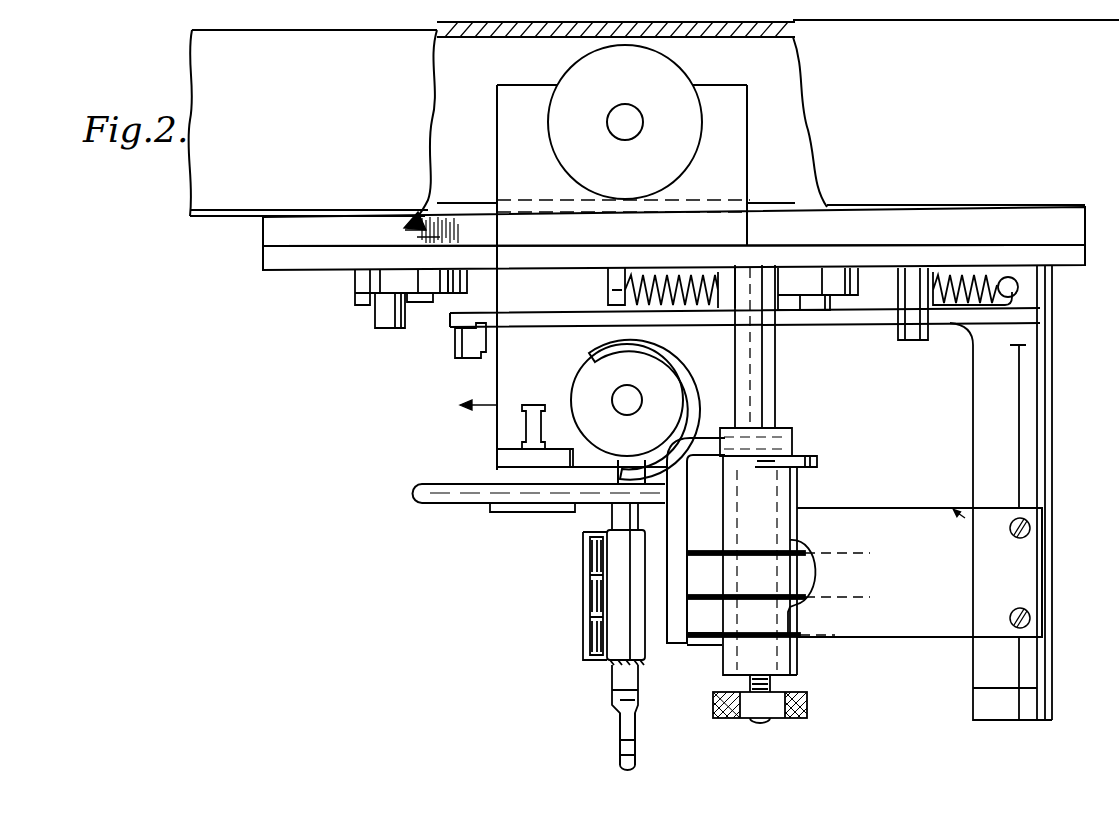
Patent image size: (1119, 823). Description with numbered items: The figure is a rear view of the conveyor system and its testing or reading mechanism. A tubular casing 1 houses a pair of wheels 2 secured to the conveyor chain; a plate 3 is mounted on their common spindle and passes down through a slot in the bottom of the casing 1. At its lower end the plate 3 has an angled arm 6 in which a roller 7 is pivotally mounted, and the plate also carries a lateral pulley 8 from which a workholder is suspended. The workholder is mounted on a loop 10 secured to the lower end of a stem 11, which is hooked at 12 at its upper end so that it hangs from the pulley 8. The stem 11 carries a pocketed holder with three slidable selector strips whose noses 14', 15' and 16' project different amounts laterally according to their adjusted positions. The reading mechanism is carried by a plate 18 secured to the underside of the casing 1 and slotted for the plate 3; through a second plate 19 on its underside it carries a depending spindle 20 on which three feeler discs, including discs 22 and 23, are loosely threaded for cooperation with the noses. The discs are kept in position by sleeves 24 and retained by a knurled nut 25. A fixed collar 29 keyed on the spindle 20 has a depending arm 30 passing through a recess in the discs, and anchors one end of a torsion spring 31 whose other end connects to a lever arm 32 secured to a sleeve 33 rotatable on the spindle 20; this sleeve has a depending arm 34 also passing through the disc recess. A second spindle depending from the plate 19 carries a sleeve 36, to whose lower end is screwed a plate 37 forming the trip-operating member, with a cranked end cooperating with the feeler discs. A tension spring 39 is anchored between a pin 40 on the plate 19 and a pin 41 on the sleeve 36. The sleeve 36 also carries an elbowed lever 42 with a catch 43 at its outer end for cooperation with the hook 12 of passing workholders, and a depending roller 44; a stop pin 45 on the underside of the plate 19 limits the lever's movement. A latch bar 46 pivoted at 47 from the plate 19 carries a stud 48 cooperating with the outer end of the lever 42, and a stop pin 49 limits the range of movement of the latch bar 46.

The tubular casing 1 is at (653, 118).
The wheels 2 is at (625, 122).
The plate 3 is at (733, 158).
The angled arm 6 is at (497, 453).
The roller 7 is at (525, 505).
The lateral pulley 8 is at (590, 378).
The loop 10 is at (622, 730).
The stem 11 is at (612, 519).
The hook 12 is at (684, 379).
The nose 14' is at (567, 634).
The nose 15' is at (569, 595).
The nose 16' is at (570, 596).
The plate 18 is at (270, 233).
The second plate 19 is at (270, 263).
The depending spindle 20 is at (762, 376).
The disc 22 is at (838, 598).
The disc 23 is at (838, 554).
The sleeves 24 is at (760, 545).
The knurled nut 25 is at (808, 700).
The fixed collar 29 is at (792, 430).
The depending arm 30 is at (679, 543).
The torsion spring 31 is at (817, 455).
The lever arm 32 is at (484, 505).
The sleeve 33 is at (787, 498).
The depending arm 34 is at (661, 641).
The sleeve 36 is at (1015, 412).
The plate 37 is at (1018, 569).
The tension spring 39 is at (681, 283).
The pin 40 is at (608, 286).
The pin 41 is at (1018, 289).
The lever 42 is at (957, 325).
The catch 43 is at (455, 353).
The depending roller 44 is at (845, 289).
The stop pin 45 is at (903, 336).
The latch bar 46 is at (447, 296).
The pivot 47 is at (408, 228).
The stud 48 is at (392, 325).
The stop pin 49 is at (355, 290).